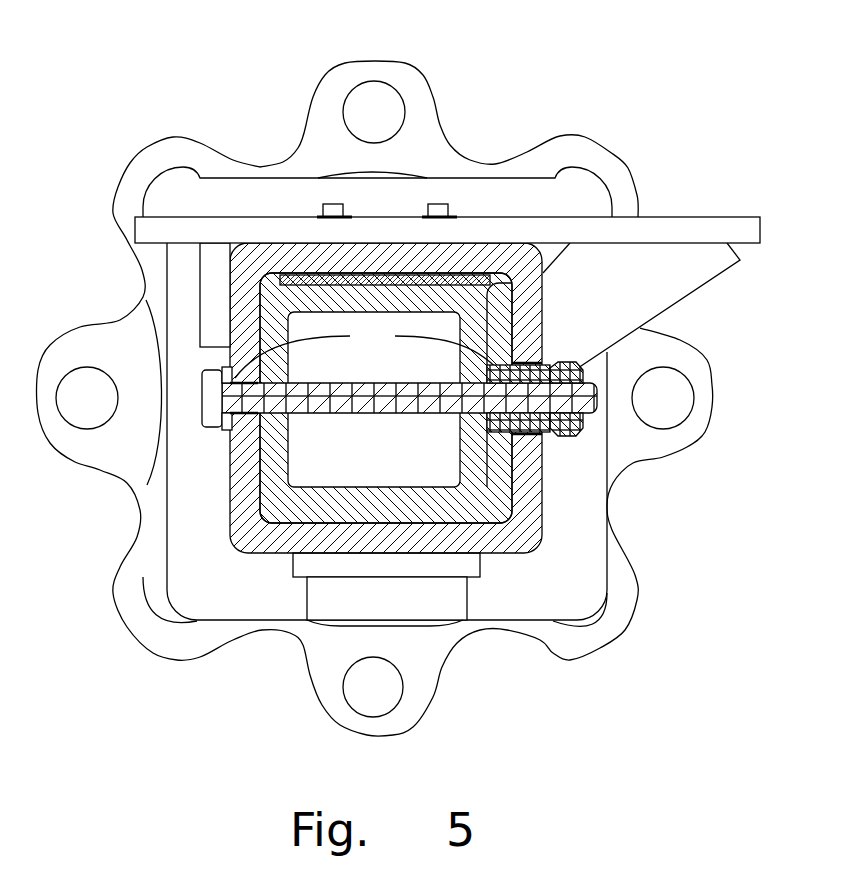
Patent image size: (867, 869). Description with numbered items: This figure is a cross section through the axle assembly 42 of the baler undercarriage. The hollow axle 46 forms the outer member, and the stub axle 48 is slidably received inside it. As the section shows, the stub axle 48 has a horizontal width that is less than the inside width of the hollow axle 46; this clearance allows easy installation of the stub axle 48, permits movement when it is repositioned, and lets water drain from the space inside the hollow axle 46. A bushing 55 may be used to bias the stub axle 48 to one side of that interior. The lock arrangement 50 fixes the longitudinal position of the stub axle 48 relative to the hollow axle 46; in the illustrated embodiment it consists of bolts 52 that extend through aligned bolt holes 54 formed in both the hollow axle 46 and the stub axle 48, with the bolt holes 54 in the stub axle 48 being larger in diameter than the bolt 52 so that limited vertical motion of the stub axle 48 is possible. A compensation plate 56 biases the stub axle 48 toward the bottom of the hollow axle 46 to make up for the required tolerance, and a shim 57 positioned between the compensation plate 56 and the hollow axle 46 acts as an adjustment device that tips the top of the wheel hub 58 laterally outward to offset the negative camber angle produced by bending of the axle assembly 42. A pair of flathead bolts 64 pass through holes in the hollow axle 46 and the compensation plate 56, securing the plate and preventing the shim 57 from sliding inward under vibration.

The axle assembly 42 is at (516, 86).
The hollow axle 46 is at (233, 495).
The stub axle 48 is at (283, 457).
The lock arrangement 50 is at (185, 356).
The bolt 52 is at (200, 393).
The bolt hole 54 is at (396, 337).
The bushing 55 is at (503, 423).
The compensation plate 56 is at (483, 283).
The shim 57 is at (463, 270).
The wheel hub 58 is at (700, 459).
The bolt 64 is at (330, 205).